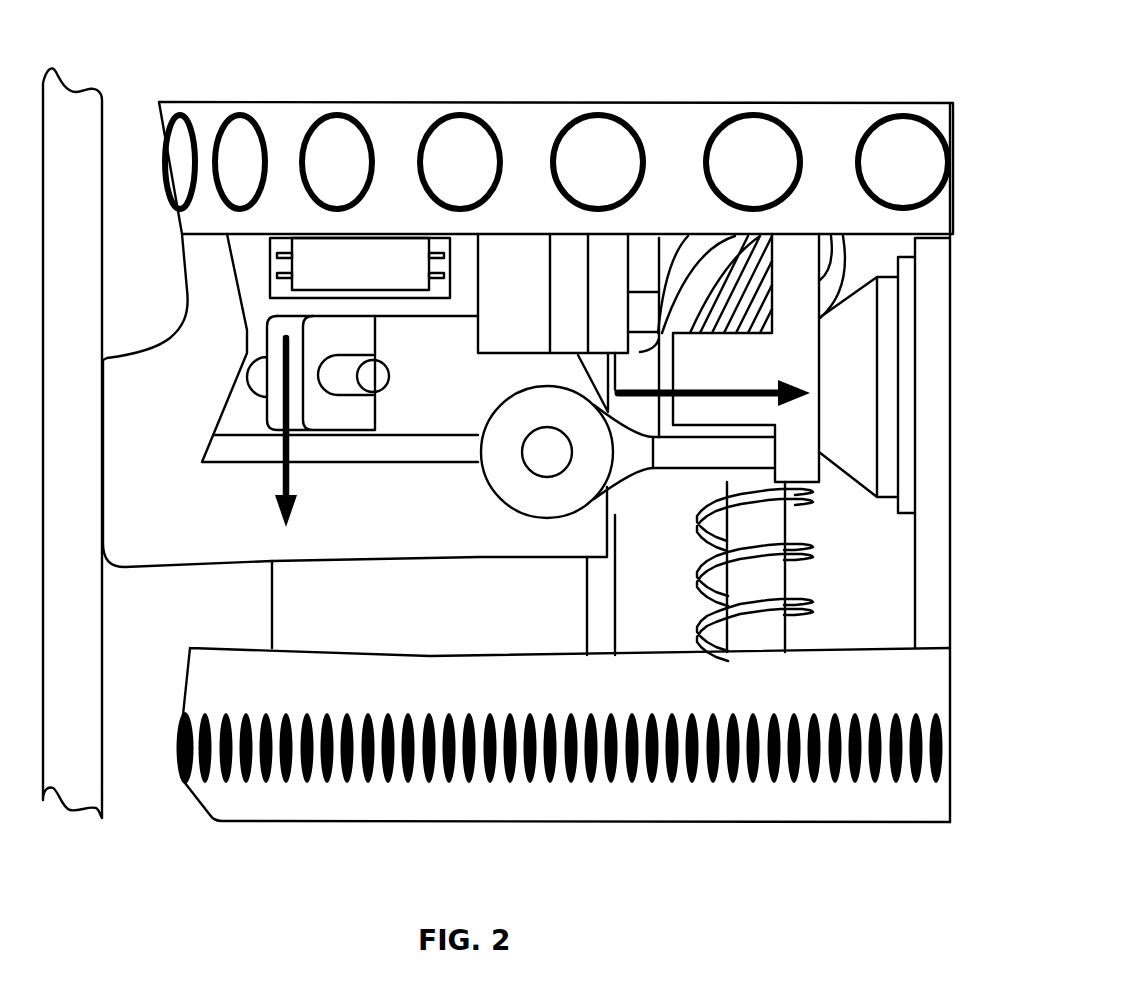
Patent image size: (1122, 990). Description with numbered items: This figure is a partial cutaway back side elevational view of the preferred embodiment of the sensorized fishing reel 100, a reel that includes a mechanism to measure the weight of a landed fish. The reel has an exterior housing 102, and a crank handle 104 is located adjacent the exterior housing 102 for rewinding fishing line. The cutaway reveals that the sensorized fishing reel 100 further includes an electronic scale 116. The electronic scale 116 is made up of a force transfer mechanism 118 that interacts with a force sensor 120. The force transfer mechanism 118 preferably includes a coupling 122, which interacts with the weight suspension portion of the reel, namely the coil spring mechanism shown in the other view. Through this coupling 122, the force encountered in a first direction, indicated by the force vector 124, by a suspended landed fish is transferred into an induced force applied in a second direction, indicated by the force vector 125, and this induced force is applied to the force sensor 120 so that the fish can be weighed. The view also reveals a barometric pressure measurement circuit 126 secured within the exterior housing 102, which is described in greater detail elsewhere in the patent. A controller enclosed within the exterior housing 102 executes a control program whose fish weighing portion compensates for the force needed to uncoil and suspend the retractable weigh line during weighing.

The sensorized fishing reel 100 is at (691, 54).
The exterior housing 102 is at (295, 100).
The crank handle 104 is at (102, 287).
The electronic scale 116 is at (184, 592).
The force transfer mechanism 118 is at (382, 487).
The force sensor 120 is at (862, 502).
The coupling 122 is at (353, 412).
The force vector 124 is at (283, 477).
The force vector 125 is at (684, 388).
The barometric pressure measurement circuit 126 is at (367, 268).